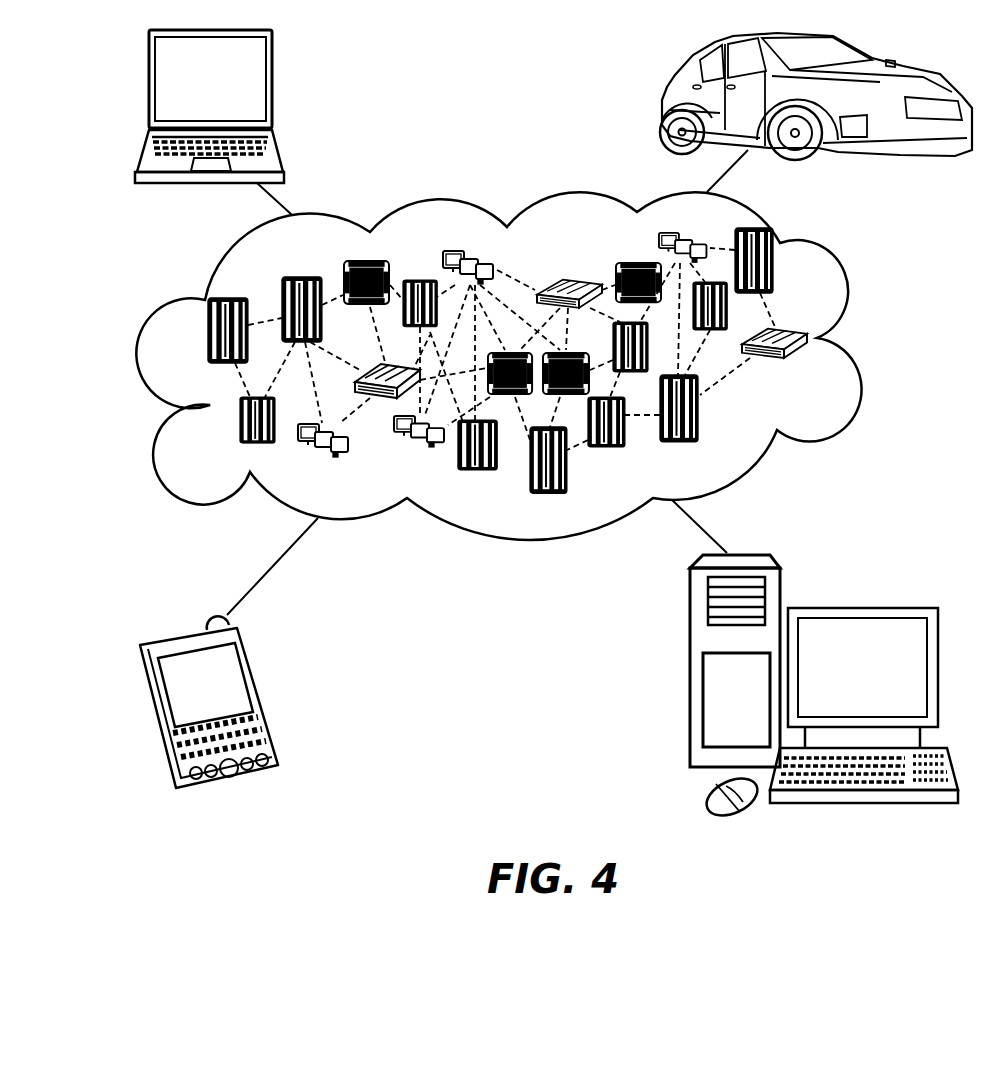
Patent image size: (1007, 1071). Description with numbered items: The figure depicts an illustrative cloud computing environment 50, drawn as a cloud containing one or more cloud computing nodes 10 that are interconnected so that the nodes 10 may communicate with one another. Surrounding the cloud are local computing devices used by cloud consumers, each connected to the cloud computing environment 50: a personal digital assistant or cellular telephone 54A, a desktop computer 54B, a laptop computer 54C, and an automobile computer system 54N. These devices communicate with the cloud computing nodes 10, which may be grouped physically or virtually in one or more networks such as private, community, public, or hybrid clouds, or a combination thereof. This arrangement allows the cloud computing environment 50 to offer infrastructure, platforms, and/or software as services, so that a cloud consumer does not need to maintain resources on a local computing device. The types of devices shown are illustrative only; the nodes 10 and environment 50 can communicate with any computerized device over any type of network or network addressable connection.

The cloud computing node 10 is at (814, 372).
The cloud computing environment 50 is at (862, 342).
The personal digital assistant or cellular telephone 54A is at (263, 697).
The desktop computer 54B is at (860, 607).
The laptop computer 54C is at (272, 85).
The automobile computer system 54N is at (662, 102).